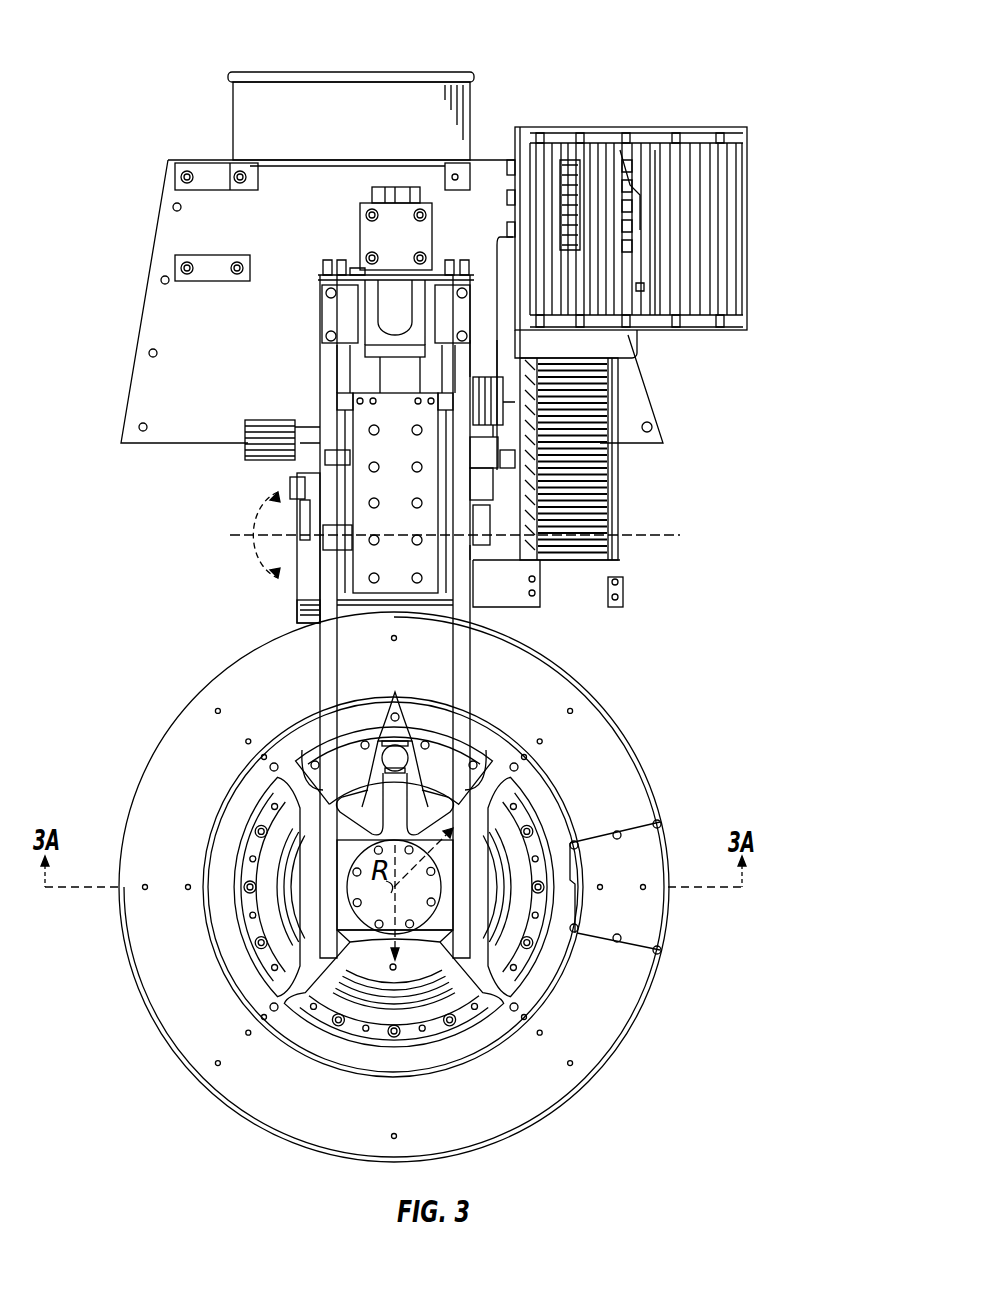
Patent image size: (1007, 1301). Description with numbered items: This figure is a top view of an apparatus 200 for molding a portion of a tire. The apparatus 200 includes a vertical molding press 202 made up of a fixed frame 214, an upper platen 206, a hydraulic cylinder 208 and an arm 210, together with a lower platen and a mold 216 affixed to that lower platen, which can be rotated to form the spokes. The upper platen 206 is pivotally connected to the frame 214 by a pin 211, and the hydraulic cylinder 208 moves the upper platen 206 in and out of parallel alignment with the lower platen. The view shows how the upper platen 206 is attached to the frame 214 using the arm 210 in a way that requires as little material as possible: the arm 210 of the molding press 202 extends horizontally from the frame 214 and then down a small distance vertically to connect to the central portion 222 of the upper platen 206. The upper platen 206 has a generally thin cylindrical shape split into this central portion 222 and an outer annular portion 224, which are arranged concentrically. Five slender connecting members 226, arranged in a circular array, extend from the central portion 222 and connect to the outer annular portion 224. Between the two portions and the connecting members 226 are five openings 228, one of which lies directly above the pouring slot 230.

The apparatus 200 is at (782, 46).
The vertical molding press 202 is at (664, 398).
The upper platen 206 is at (610, 708).
The hydraulic cylinder 208 is at (395, 303).
The arm 210 is at (471, 667).
The pin 211 is at (497, 548).
The frame 214 is at (296, 615).
The mold 216 is at (437, 942).
The central portion 222 is at (350, 942).
The outer annular portion 224 is at (128, 950).
The connecting members 226 is at (522, 792).
The openings 228 is at (395, 692).
The pouring slot 230 is at (538, 870).